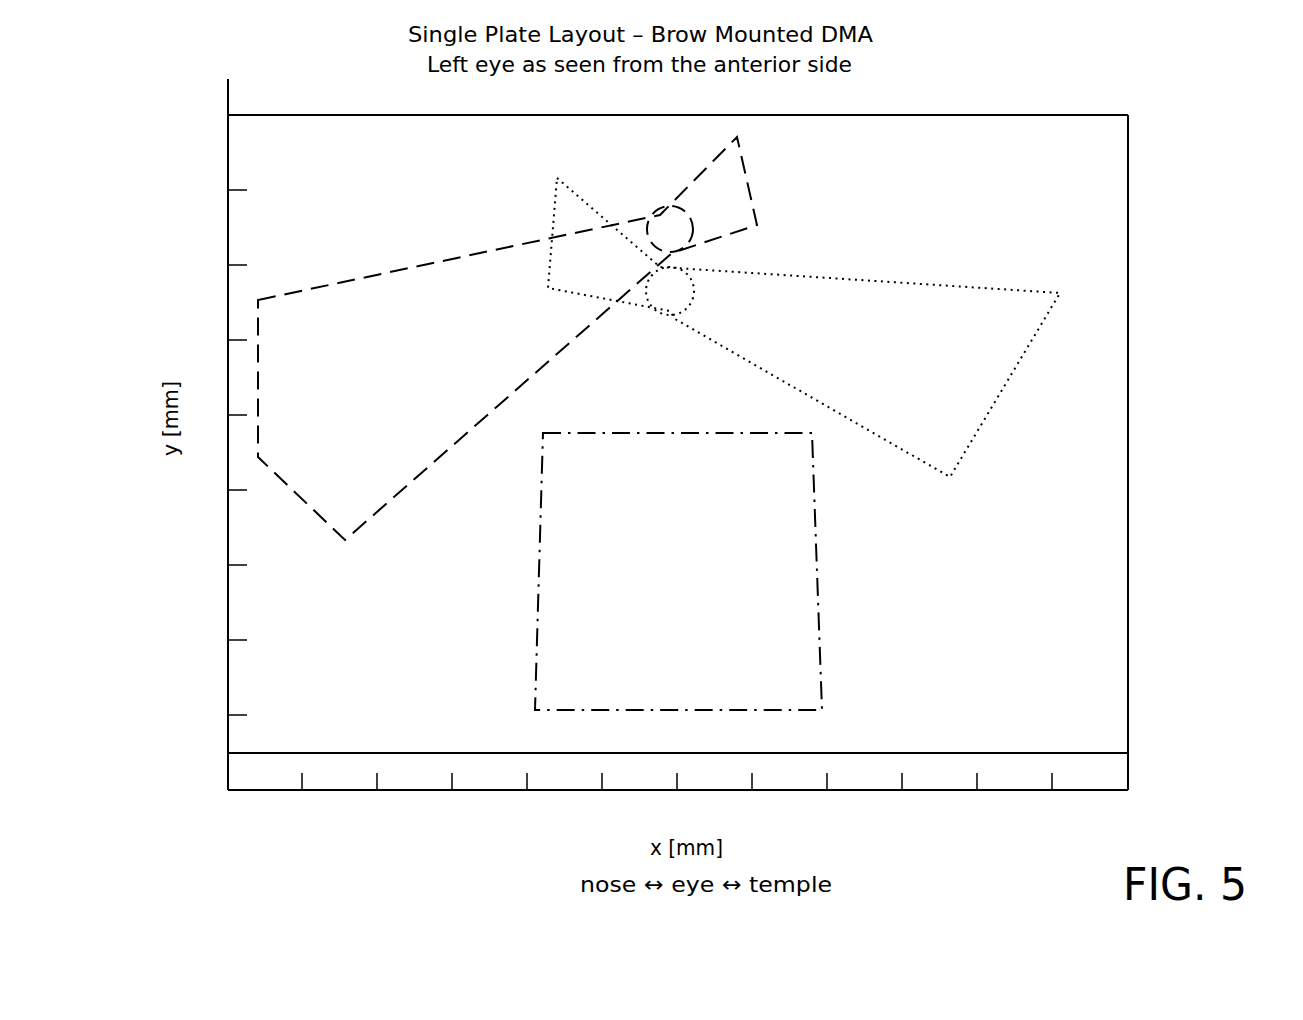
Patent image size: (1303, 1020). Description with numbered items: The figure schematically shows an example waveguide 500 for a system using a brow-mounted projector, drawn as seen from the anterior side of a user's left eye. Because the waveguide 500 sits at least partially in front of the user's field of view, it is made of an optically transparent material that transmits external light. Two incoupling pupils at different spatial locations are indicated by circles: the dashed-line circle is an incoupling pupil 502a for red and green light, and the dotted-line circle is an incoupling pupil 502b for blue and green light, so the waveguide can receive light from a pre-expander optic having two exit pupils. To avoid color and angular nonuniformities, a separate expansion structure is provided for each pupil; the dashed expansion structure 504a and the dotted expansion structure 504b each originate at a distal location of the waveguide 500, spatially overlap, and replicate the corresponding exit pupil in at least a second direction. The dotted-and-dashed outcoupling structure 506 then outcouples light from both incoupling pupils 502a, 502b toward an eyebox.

The waveguide 500 is at (1155, 122).
The incoupling pupil 502a is at (663, 204).
The incoupling pupil 502b is at (672, 322).
The expansion structure 504a is at (458, 258).
The expansion structure 504b is at (835, 278).
The outcoupling structure 506 is at (820, 578).